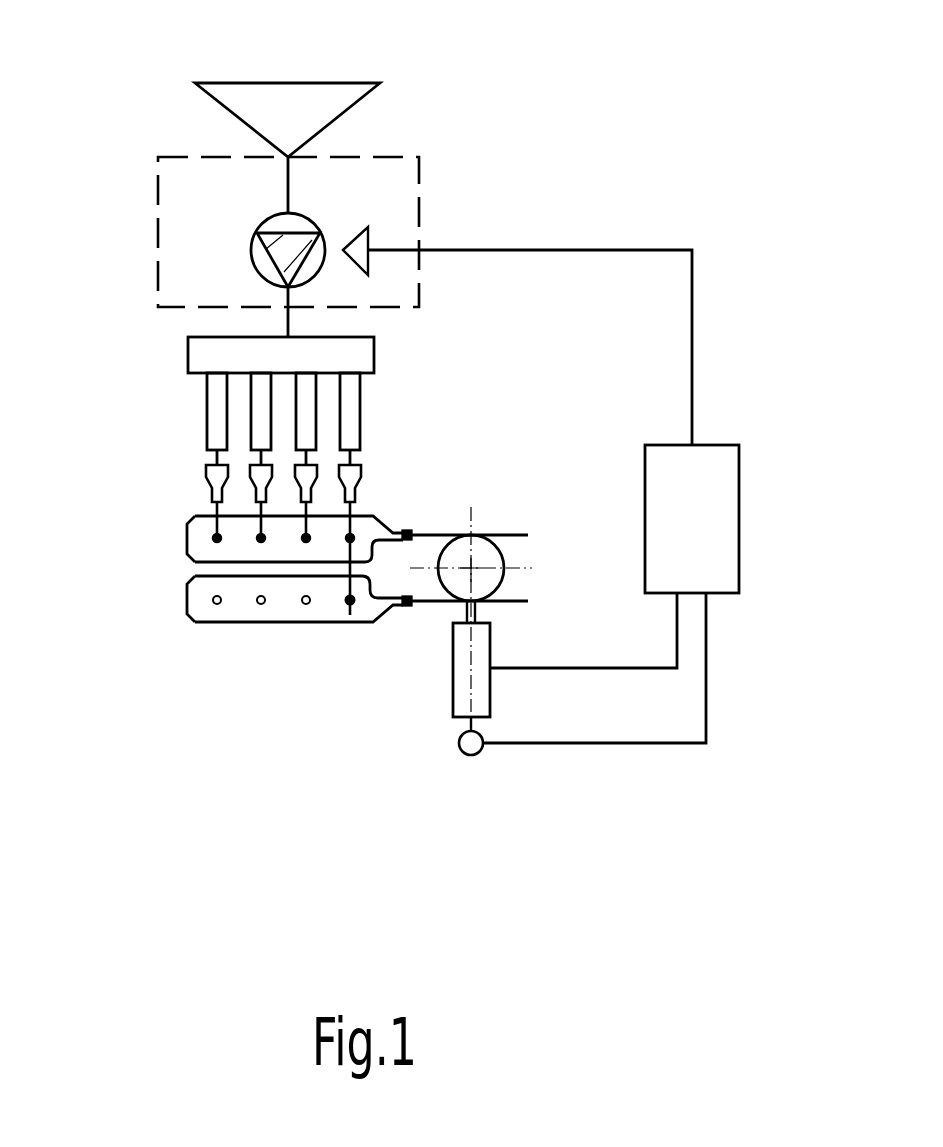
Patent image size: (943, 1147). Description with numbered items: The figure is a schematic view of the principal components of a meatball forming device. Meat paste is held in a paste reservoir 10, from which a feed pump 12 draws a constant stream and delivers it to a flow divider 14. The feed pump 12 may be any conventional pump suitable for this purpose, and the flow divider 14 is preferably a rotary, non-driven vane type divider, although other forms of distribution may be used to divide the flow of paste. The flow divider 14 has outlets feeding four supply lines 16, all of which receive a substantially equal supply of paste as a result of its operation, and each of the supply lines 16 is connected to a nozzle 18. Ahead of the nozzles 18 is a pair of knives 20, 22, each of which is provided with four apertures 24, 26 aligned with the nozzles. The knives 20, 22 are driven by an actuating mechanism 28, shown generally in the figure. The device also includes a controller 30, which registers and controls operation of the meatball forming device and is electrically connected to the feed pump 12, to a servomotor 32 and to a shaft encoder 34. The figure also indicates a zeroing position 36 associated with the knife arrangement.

The paste reservoir 10 is at (349, 93).
The feed pump 12 is at (175, 185).
The flow divider 14 is at (195, 348).
The supply lines 16 is at (210, 410).
The nozzle 18 is at (207, 474).
The knife 20 is at (188, 538).
The knife 22 is at (188, 601).
The apertures 24 is at (215, 537).
The apertures 26 is at (215, 601).
The actuating mechanism 28 is at (462, 607).
The controller 30 is at (722, 463).
The servomotor 32 is at (455, 710).
The shaft encoder 34 is at (465, 748).
The zeroing position 36 is at (350, 517).